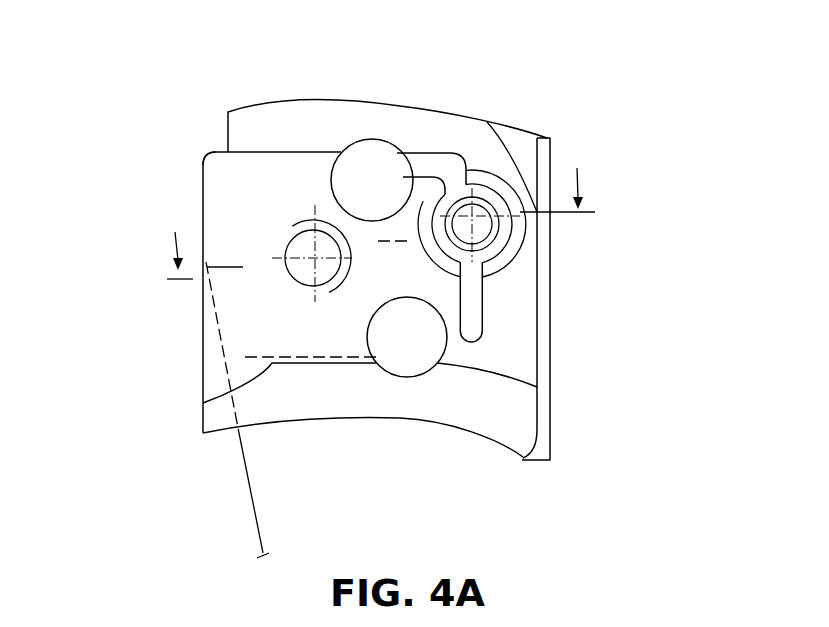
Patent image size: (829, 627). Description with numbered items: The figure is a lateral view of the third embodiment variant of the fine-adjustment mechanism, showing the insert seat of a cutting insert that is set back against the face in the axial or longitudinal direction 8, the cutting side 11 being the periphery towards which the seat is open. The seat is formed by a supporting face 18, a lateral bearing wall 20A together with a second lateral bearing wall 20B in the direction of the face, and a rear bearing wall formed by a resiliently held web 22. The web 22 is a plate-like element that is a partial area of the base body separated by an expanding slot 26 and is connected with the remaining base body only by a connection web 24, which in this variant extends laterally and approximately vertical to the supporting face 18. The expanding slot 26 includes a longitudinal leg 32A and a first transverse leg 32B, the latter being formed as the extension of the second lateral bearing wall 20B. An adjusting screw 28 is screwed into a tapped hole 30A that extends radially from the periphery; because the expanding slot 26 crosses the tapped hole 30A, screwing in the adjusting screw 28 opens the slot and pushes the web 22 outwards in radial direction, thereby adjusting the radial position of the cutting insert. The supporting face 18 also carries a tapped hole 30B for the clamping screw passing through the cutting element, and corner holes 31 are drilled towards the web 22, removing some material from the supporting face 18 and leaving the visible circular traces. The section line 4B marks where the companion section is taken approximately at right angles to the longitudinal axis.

The longitudinal direction 8 is at (552, 438).
The cutting side 11 is at (92, 257).
The supporting face 18 is at (267, 315).
The lateral bearing wall 20A is at (203, 403).
The second lateral bearing wall 20B is at (298, 150).
The web 22 is at (443, 292).
The connection web 24 is at (537, 387).
The expanding slot 26 is at (490, 268).
The adjusting screw 28 is at (213, 157).
The tapped hole 30A is at (490, 182).
The tapped hole 30B is at (302, 240).
The corner holes 31 is at (366, 139).
The longitudinal leg 32A is at (490, 317).
The first transverse leg 32B is at (395, 180).
The section line 4B- 4B is at (373, 347).